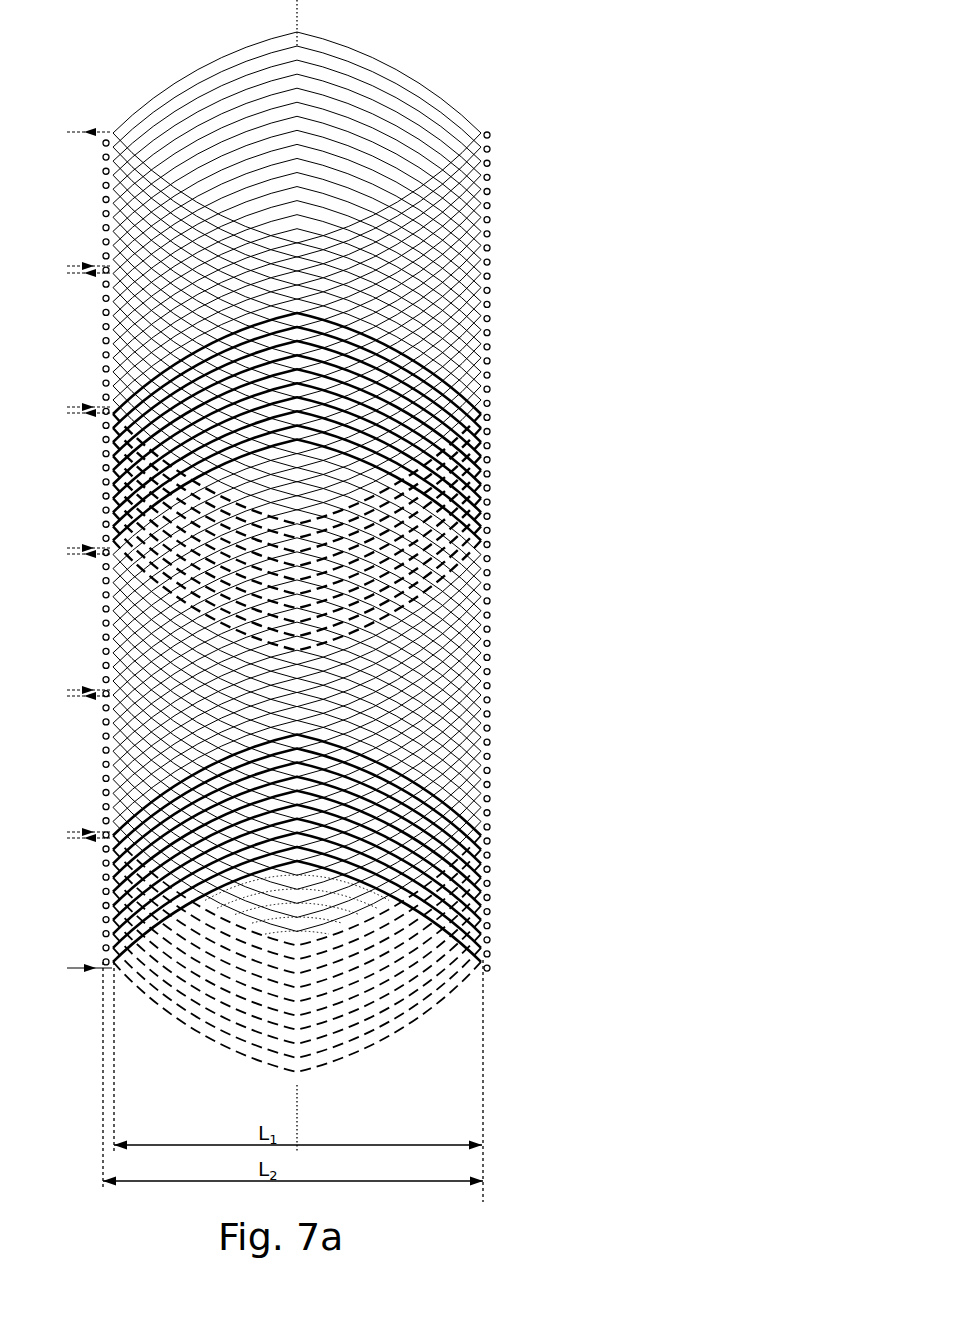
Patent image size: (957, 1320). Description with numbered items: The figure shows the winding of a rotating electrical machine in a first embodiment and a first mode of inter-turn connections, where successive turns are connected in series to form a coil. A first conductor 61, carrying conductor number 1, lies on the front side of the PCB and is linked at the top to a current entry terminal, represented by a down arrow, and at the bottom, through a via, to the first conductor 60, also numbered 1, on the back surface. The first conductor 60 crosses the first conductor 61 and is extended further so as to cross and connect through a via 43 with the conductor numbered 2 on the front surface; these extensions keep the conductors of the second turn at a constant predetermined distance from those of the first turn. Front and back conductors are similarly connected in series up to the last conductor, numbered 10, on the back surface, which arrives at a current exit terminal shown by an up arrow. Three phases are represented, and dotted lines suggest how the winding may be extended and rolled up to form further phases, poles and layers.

The conductor number 1 is at (386, 1103).
The conductor number 2 is at (297, 904).
The conductor number 10 is at (297, 630).
The via 43 is at (487, 968).
The first conductor on the back surface 60 is at (427, 1018).
The first conductor on the front side 61 is at (228, 885).